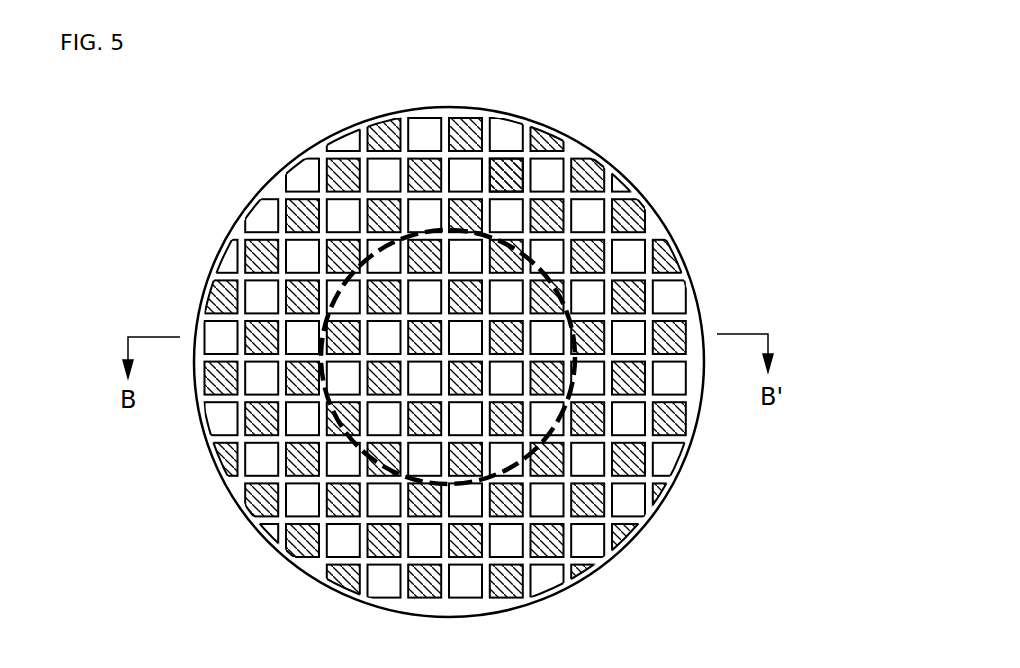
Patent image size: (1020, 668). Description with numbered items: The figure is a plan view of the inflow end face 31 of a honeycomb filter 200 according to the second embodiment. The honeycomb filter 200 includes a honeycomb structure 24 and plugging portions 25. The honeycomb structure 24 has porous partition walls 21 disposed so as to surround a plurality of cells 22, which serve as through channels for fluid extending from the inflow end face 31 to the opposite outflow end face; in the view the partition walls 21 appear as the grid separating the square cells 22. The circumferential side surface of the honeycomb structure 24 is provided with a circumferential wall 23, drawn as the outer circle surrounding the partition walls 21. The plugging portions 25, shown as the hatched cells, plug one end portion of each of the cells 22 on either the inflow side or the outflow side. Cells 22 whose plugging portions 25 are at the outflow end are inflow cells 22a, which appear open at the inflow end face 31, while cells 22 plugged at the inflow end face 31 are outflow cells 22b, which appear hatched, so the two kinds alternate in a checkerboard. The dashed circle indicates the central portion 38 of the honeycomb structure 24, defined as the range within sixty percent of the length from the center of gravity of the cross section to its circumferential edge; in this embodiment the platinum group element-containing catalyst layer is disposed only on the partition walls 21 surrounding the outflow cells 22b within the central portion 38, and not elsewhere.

The honeycomb filter 200 is at (806, 81).
The partition walls 21 is at (592, 217).
The cells 22 is at (689, 207).
The inflow cells 22a is at (565, 212).
The outflow cells 22b is at (590, 260).
The circumferential wall 23 is at (665, 480).
The honeycomb structure 24 is at (716, 281).
The plugging portions 25 is at (503, 178).
The inflow end face 31 is at (253, 171).
The central portion 38 is at (509, 458).